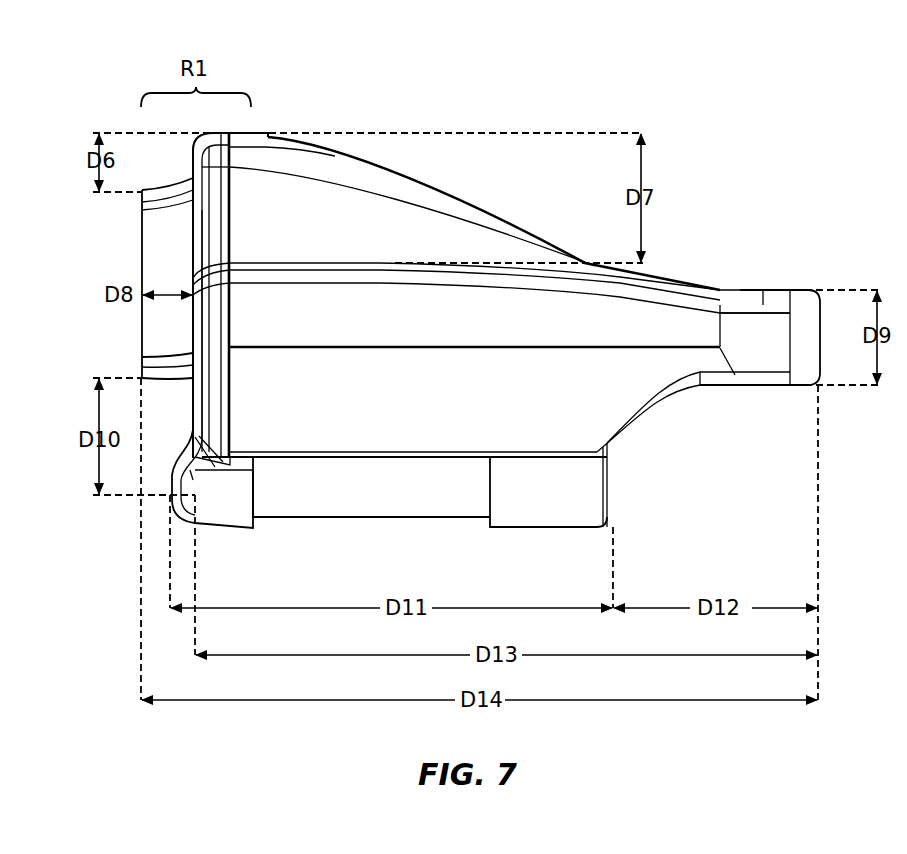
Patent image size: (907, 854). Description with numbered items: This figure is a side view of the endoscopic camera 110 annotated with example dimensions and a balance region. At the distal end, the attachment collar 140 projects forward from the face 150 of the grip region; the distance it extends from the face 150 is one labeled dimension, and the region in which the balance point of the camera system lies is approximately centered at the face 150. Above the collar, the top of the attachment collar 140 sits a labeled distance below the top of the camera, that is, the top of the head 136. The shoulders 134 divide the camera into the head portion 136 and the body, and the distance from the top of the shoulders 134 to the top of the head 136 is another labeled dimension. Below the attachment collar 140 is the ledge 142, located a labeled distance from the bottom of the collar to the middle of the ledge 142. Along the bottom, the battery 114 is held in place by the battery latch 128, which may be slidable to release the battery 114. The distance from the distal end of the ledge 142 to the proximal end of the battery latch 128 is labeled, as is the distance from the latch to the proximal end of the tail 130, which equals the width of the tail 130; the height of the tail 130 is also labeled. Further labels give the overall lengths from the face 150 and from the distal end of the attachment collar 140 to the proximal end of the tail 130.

The endoscopic camera 110 is at (693, 80).
The battery 114 is at (327, 497).
The battery latch 128 is at (545, 510).
The tail portion 130 is at (742, 270).
The shoulders 134 is at (408, 265).
The head portion 136 is at (508, 202).
The attachment collar 140 is at (153, 338).
The ledge 142 is at (217, 510).
The face 150 is at (193, 257).